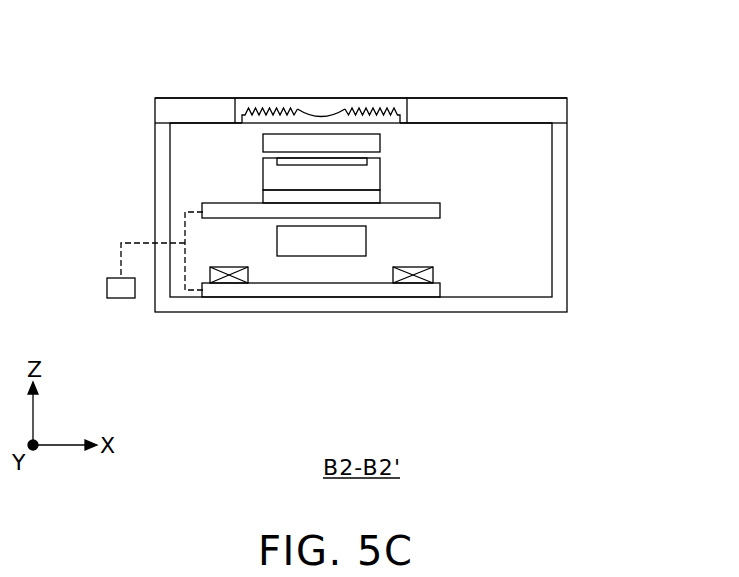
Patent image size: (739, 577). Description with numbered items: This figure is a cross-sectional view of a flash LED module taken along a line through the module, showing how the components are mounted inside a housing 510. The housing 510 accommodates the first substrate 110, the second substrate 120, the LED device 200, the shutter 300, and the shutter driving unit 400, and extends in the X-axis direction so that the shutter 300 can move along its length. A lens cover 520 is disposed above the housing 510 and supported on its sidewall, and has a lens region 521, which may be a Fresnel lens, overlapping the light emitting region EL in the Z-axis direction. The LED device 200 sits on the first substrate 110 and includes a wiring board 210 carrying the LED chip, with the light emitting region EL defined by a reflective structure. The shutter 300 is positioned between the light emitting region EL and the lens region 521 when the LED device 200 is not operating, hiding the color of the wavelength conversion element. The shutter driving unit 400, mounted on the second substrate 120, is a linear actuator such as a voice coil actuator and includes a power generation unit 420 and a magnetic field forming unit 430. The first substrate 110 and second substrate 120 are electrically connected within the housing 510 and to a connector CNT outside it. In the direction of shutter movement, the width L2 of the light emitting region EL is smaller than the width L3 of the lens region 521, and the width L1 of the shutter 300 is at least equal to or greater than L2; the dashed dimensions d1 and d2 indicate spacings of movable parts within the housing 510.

The housing 510 is at (558, 242).
The lens cover 520 is at (493, 110).
The lens region 521 is at (395, 103).
The shutter 300 is at (280, 147).
The LED device 200 is at (228, 181).
The light emitting region EL is at (279, 162).
The wiring board 210 is at (275, 197).
The first substrate 110 is at (430, 212).
The second substrate 120 is at (222, 288).
The shutter driving unit 400 is at (321, 326).
The power generation unit 420 is at (307, 239).
The magnetic field forming unit 430 is at (390, 281).
The connector CNT is at (118, 290).
The width of the shutter L1 is at (382, 135).
The width of the light emission region L2 is at (277, 181).
The width of the lens region L3 is at (407, 98).
The distance d1 is at (367, 241).
The distance d2 is at (370, 145).